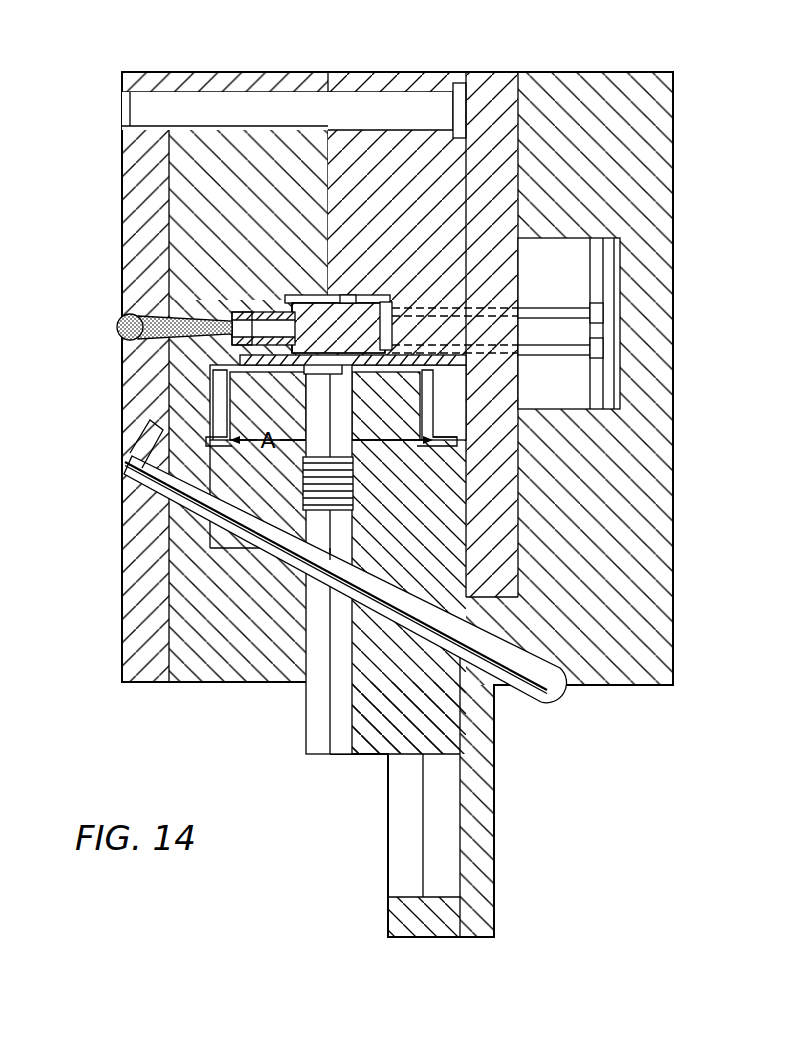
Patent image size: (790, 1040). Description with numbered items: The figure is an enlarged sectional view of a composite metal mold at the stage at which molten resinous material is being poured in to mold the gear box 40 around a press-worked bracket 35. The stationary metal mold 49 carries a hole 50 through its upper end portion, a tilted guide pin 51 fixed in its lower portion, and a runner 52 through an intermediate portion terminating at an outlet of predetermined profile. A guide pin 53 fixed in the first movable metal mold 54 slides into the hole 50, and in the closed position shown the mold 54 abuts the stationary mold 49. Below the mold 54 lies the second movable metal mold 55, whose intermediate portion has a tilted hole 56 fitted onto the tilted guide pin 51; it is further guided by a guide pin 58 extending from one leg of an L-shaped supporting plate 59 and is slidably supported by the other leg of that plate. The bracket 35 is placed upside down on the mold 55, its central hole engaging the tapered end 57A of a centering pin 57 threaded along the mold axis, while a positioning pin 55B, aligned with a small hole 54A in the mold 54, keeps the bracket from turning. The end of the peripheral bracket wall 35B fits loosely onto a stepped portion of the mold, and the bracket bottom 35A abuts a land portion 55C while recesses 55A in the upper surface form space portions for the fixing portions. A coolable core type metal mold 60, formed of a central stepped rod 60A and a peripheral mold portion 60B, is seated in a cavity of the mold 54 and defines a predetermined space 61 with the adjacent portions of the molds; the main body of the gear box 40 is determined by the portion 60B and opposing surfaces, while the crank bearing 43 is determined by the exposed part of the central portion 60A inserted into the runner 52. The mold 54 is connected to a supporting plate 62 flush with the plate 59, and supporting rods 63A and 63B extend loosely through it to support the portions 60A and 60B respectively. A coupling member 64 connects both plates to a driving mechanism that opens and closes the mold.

The bracket 35 is at (440, 420).
The bottom of the bracket 35A is at (352, 372).
The peripheral bracket wall 35B is at (433, 405).
The gear box 40 is at (310, 297).
The crank bearing 43 is at (268, 298).
The stationary metal mold 49 is at (250, 682).
The hole 50 is at (187, 96).
The tilted guide pin 51 is at (330, 550).
The runner 52 is at (126, 334).
The guide pin 53 is at (260, 96).
The first movable metal mold 54 is at (427, 130).
The small hole 54A is at (402, 355).
The second movable metal mold 55 is at (380, 745).
The recesses 55A is at (213, 370).
The positioning pin 55B is at (477, 345).
The land portion 55C is at (185, 339).
The tilted hole 56 is at (383, 607).
The centering pin 57 is at (318, 407).
The tapered end 57A is at (316, 386).
The guide pin 58 is at (395, 822).
The L-shaped supporting plate 59 is at (485, 820).
The core type metal mold 60 is at (368, 297).
The central mold portion 60A is at (268, 312).
The peripheral mold portion 60B is at (391, 310).
The space 61 is at (356, 297).
The supporting plate 62 is at (502, 90).
The supporting rod 63A is at (573, 305).
The supporting rod 63B is at (580, 358).
The coupling member 64 is at (652, 531).